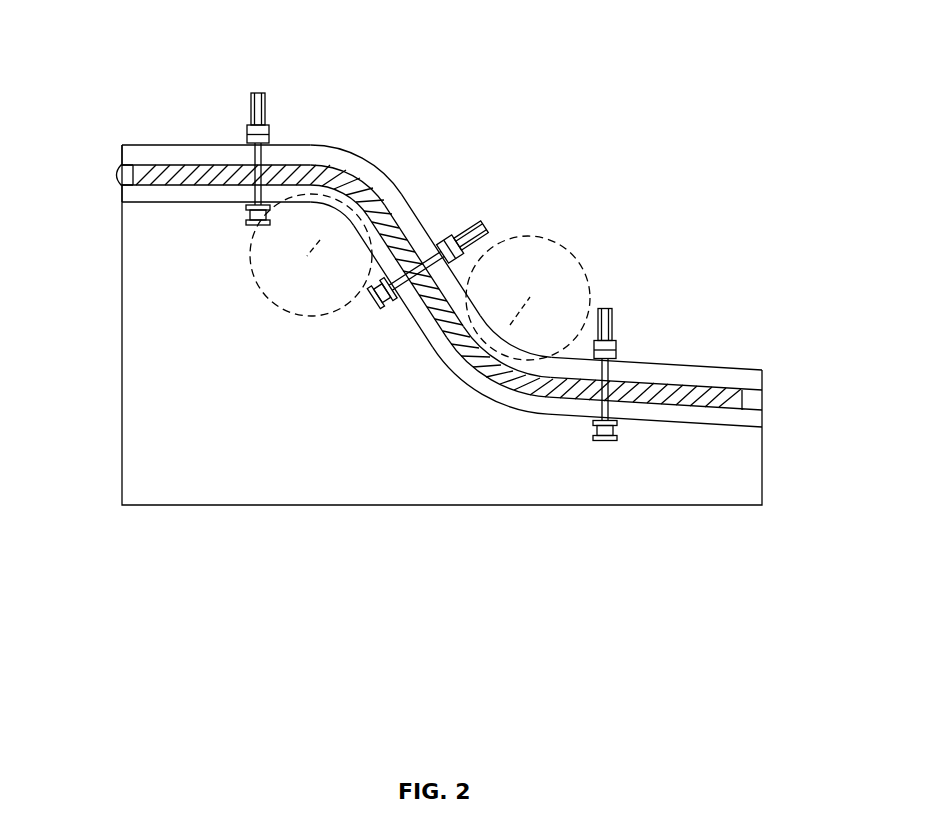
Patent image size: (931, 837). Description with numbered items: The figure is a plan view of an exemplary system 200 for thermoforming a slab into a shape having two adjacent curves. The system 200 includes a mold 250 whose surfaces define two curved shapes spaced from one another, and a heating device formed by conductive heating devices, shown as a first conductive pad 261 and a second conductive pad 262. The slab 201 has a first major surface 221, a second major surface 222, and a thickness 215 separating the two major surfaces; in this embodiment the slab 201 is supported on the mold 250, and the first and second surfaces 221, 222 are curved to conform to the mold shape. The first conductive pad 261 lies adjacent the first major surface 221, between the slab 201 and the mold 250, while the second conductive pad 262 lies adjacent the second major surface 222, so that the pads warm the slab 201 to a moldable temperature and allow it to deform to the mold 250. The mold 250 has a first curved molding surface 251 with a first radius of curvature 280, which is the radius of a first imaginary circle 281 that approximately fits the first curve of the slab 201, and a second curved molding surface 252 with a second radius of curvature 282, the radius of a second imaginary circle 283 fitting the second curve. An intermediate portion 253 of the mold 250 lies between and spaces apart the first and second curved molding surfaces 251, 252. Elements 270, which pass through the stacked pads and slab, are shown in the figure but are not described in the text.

The system for thermoforming a slab 200 is at (120, 48).
The slab 201 is at (230, 173).
The thickness 215 is at (113, 172).
The first major surface 221 is at (693, 403).
The second major surface 222 is at (638, 382).
The mold 250 is at (122, 388).
The first curved molding surface 251 is at (330, 190).
The second curved molding surface 252 is at (473, 385).
The intermediate portion 253 is at (404, 313).
The first conductive pad 261 is at (135, 190).
The second conductive pad 262 is at (155, 155).
The fastener 270 is at (273, 138).
The first radius of curvature 280 is at (320, 240).
The first imaginary circle 281 is at (297, 315).
The second radius of curvature 282 is at (513, 323).
The second imaginary circle 283 is at (552, 237).